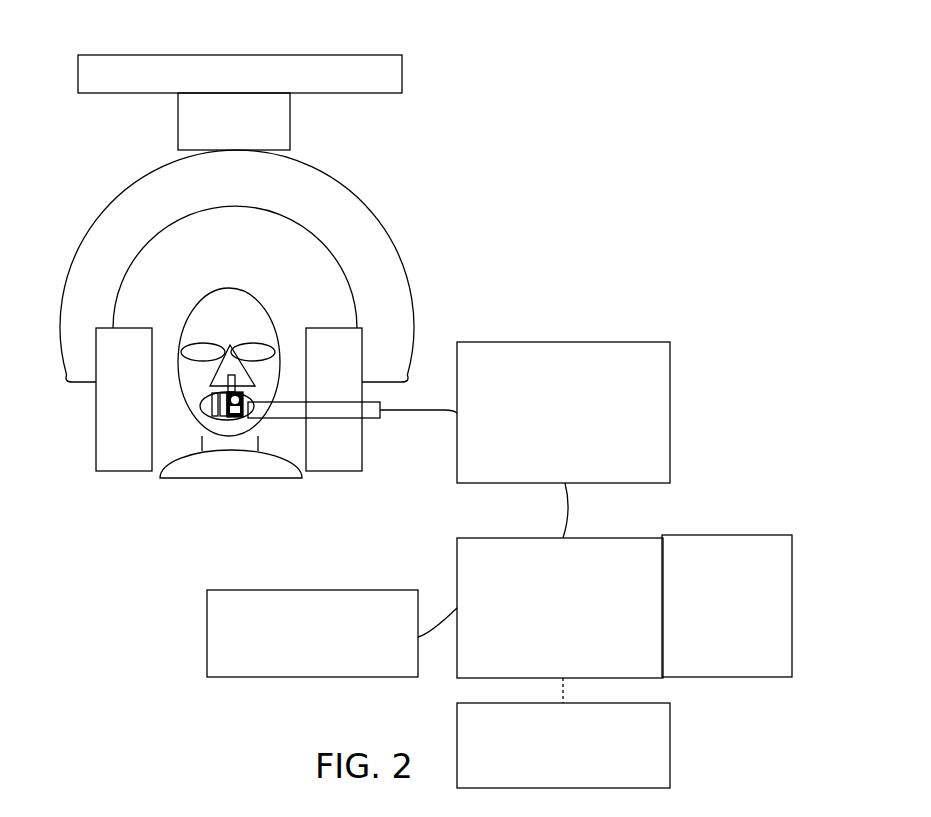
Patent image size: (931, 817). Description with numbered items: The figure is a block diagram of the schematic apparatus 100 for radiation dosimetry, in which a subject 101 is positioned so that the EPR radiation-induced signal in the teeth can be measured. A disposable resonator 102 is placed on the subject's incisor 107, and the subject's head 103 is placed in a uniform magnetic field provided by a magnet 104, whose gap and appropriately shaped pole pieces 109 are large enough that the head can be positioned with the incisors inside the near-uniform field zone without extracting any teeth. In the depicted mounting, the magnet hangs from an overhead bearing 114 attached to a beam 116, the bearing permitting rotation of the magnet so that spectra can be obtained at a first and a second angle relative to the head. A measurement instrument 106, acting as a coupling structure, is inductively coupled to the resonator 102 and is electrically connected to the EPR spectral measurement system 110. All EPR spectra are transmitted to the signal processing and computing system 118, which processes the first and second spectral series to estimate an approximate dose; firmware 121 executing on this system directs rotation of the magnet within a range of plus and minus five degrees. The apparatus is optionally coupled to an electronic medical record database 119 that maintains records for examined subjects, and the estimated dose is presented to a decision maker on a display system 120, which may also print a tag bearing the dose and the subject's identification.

The apparatus 100 is at (680, 60).
The subject 101 is at (268, 501).
The disposable resonator 102 is at (247, 398).
The subject's head 103 is at (218, 300).
The magnet 104 is at (368, 232).
The measurement instrument 106 is at (357, 413).
The incisor 107 is at (213, 405).
The pole pieces 109 is at (112, 450).
The EPR spectral measurement system 110 is at (544, 465).
The overhead bearing 114 is at (215, 132).
The beam 116 is at (220, 84).
The signal processing and computing system 118 is at (625, 646).
The electronic medical record database 119 is at (386, 645).
The display system 120 is at (545, 771).
The firmware 121 is at (707, 631).